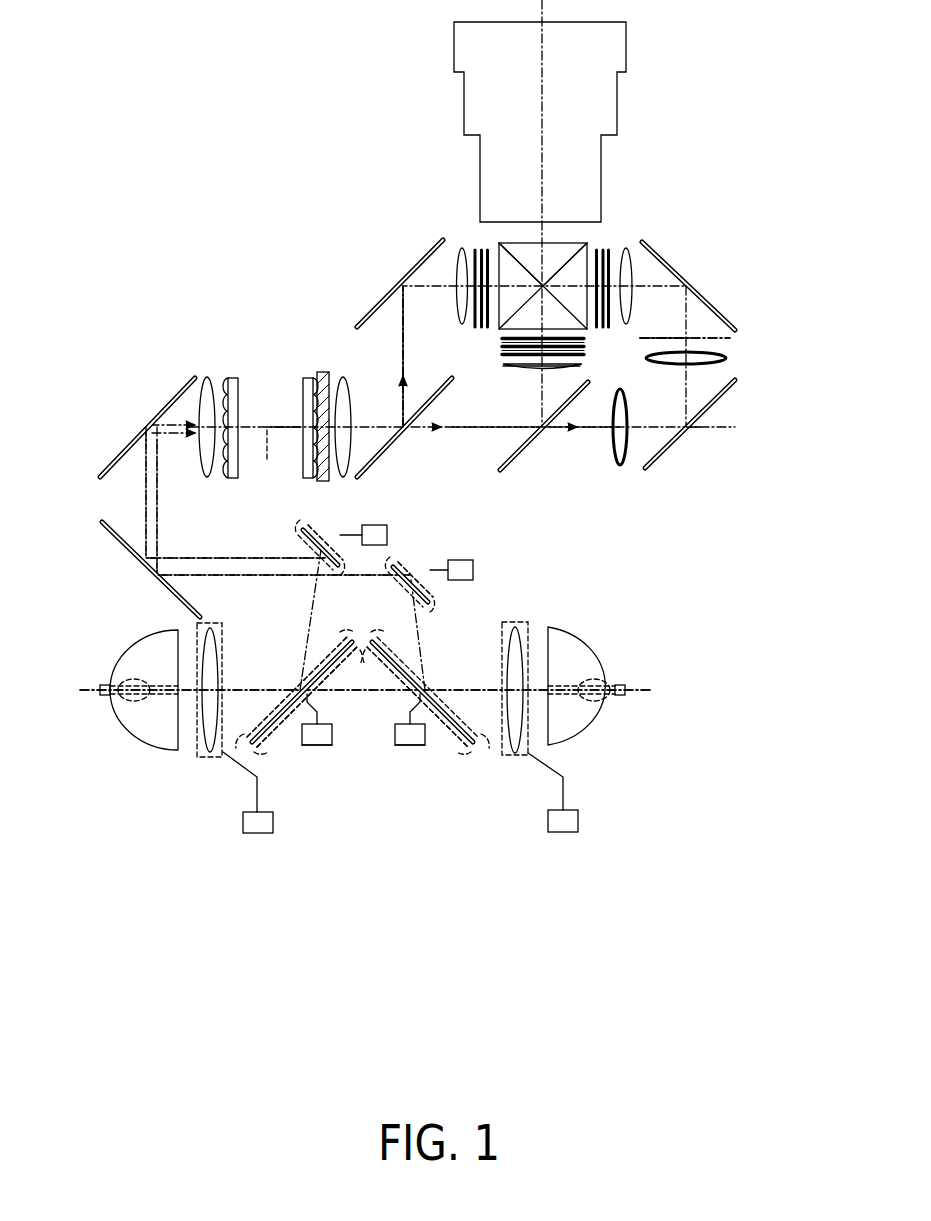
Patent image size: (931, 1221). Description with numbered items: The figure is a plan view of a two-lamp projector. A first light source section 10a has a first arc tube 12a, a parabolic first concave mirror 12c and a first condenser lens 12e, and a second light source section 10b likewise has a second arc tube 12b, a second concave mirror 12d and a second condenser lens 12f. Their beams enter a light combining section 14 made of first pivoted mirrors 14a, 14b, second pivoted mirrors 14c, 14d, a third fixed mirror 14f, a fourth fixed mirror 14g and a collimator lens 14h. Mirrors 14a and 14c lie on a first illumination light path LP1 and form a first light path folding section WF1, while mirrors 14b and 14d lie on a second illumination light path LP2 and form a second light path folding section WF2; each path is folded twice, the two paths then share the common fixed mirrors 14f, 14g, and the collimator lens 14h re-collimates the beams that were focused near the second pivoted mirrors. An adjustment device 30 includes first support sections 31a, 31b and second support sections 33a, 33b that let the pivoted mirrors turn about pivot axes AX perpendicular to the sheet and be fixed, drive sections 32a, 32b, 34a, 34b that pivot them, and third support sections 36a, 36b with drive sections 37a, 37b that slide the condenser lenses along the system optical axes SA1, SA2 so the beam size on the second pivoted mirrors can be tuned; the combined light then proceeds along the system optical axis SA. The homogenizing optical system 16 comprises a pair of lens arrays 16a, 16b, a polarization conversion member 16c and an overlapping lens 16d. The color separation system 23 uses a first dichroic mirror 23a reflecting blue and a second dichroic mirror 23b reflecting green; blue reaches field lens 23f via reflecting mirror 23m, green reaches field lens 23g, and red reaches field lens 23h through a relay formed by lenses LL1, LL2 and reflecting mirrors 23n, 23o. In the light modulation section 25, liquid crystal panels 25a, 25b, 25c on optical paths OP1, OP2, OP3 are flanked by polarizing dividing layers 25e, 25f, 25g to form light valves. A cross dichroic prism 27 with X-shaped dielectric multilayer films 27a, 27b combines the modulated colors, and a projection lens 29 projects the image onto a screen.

The projection lens 29 is at (492, 98).
The cross dichroic prism 27 is at (564, 238).
The dielectric multilayer film 27a is at (590, 248).
The dielectric multilayer film 27b is at (467, 240).
The light modulation section 25 is at (473, 248).
The liquid crystal panel 25a is at (458, 300).
The liquid crystal panel 25b is at (503, 347).
The liquid crystal panel 25c is at (633, 276).
The polarizing dividing layers 25e is at (476, 328).
The polarizing dividing layers 25f is at (583, 352).
The polarizing dividing layers 25g is at (605, 328).
The color separation system 23 is at (706, 440).
The first dichroic mirror 23a is at (382, 458).
The second dichroic mirror 23b is at (528, 455).
The field lens 23f is at (455, 282).
The field lens 23g is at (510, 368).
The field lens 23h is at (690, 287).
The reflecting mirror 23m is at (378, 300).
The reflecting mirror 23n is at (716, 420).
The reflecting mirror 23o is at (720, 312).
The homogenizing optical system 16 is at (272, 326).
The lens array 16a is at (232, 378).
The lens array 16b is at (306, 380).
The polarization conversion member 16c is at (320, 372).
The overlapping lens 16d is at (345, 479).
The light combining section 14 is at (130, 510).
The first pivoted mirror 14a is at (268, 752).
The first pivoted mirror 14b is at (466, 750).
The second pivoted mirror 14c is at (305, 545).
The second pivoted mirror 14d is at (432, 590).
The third fixed mirror 14f is at (122, 550).
The fourth fixed mirror 14g is at (130, 447).
The collimator lens 14h is at (205, 378).
The second support section 33a is at (312, 530).
The second support section 33b is at (403, 562).
The drive section 34a is at (387, 532).
The drive section 34b is at (473, 570).
The first support section 31a is at (318, 728).
The first support section 31b is at (325, 656).
The drive section 32a is at (336, 748).
The drive section 32b is at (405, 748).
The adjustment device 30 is at (367, 810).
The first light source section 10a is at (194, 777).
The second light source section 10b is at (498, 774).
The first arc tube 12a is at (130, 702).
The second arc tube 12b is at (600, 702).
The first concave mirror 12c is at (160, 752).
The second concave mirror 12d is at (577, 746).
The first condenser lens 12e is at (213, 757).
The second condenser lens 12f is at (517, 757).
The third support section 36a is at (197, 628).
The third support section 36b is at (528, 625).
The drive section 37a is at (258, 834).
The drive section 37b is at (563, 833).
The first light path folding section WF1 is at (306, 758).
The second light path folding section WF2 is at (437, 759).
The first illumination light path LP1 is at (318, 608).
The second illumination light path LP2 is at (422, 638).
The system optical axis SA is at (266, 458).
The system optical axis SA1 is at (197, 555).
The system optical axis SA2 is at (470, 688).
The pivot axis AX is at (328, 545).
The first optical path OP1 is at (403, 358).
The second optical path OP2 is at (540, 400).
The third optical path OP3 is at (690, 340).
The lens LL1 is at (620, 466).
The lens LL2 is at (727, 362).